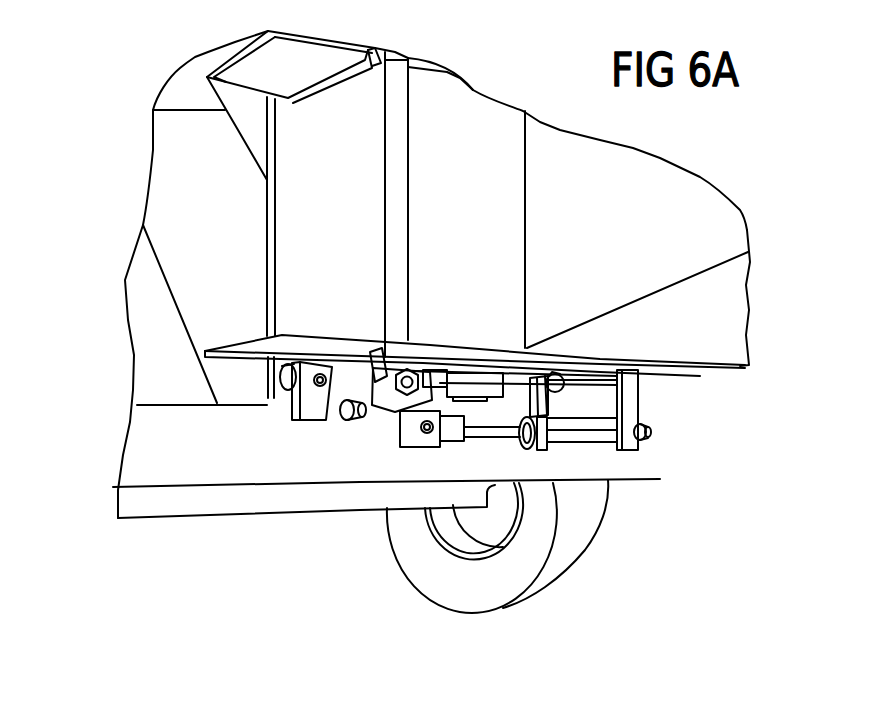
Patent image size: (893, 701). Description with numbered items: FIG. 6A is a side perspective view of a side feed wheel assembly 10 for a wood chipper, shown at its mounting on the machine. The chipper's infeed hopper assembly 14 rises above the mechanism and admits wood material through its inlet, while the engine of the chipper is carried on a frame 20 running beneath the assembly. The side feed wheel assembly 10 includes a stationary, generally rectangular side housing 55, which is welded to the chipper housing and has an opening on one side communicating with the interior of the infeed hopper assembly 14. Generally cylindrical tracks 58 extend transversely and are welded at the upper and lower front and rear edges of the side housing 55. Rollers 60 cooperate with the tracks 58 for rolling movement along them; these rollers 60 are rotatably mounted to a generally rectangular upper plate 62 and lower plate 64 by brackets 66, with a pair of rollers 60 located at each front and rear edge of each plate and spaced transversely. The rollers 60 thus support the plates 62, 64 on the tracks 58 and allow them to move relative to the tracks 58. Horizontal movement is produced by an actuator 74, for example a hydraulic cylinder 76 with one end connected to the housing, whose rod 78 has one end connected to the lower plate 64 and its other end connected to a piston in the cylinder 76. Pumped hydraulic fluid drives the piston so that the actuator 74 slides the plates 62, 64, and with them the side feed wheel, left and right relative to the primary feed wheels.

The side feed wheel assembly 10 is at (497, 90).
The infeed hopper assembly 14 is at (717, 235).
The frame 20 is at (150, 476).
The side housing 55 is at (300, 223).
The tracks 58 is at (279, 379).
The rollers 60 is at (291, 400).
The upper plate 62 is at (302, 60).
The lower plate 64 is at (227, 353).
The brackets 66 is at (297, 417).
The actuator 74 is at (520, 447).
The cylinder 76 is at (568, 437).
The rod 78 is at (480, 433).